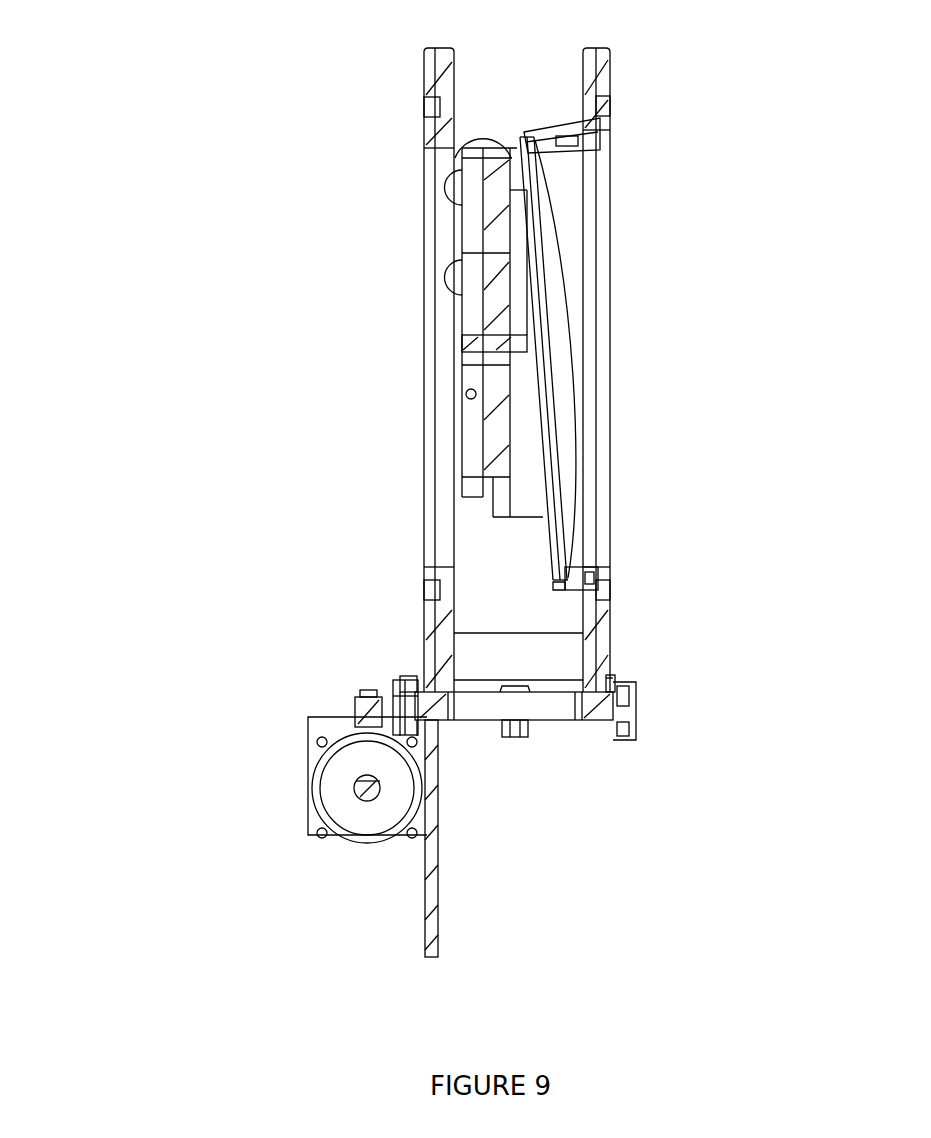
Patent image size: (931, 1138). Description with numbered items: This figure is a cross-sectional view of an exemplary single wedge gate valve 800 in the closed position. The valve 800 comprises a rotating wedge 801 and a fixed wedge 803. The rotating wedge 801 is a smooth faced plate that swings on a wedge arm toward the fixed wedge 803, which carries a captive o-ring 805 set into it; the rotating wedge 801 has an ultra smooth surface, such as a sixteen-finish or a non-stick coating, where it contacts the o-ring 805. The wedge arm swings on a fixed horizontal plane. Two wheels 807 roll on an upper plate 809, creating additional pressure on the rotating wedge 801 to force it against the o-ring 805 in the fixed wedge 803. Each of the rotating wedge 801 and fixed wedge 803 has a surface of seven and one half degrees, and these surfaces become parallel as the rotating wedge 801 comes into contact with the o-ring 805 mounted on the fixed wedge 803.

The single wedge gate valve 800 is at (265, 400).
The rotating wedge 801 is at (521, 133).
The fixed wedge 803 is at (583, 553).
The o-ring 805 is at (548, 138).
The wheels 807 is at (453, 183).
The upper plate 809 is at (443, 70).